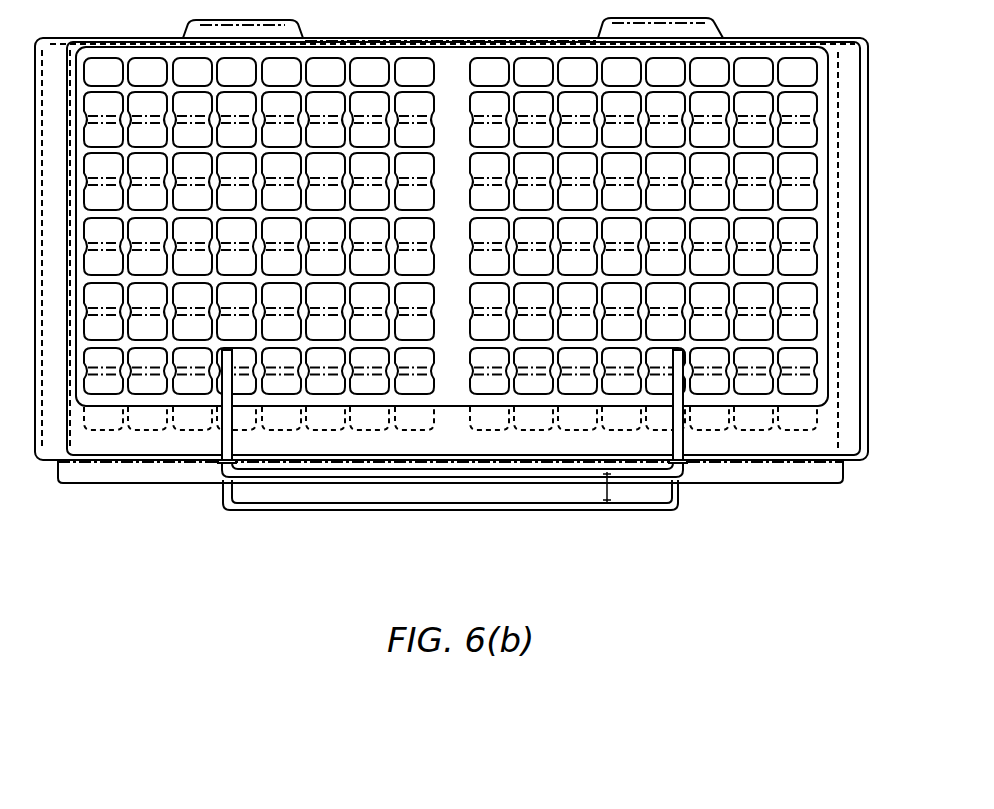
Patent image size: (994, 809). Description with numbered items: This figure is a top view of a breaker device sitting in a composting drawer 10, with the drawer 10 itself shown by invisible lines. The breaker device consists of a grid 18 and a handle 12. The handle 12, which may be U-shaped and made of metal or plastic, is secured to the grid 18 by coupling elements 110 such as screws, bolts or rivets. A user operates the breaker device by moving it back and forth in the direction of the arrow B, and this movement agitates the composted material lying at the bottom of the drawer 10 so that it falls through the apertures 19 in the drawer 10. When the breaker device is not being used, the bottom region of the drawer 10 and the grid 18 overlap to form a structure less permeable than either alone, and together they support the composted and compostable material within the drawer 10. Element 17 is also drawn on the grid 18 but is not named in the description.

The drawer 10 is at (871, 89).
The handle 12 is at (682, 479).
The battery cell 17 is at (803, 178).
The grid 18 is at (821, 411).
The apertures 19 is at (803, 293).
The coupling elements 110 is at (684, 404).
The arrow B is at (607, 503).